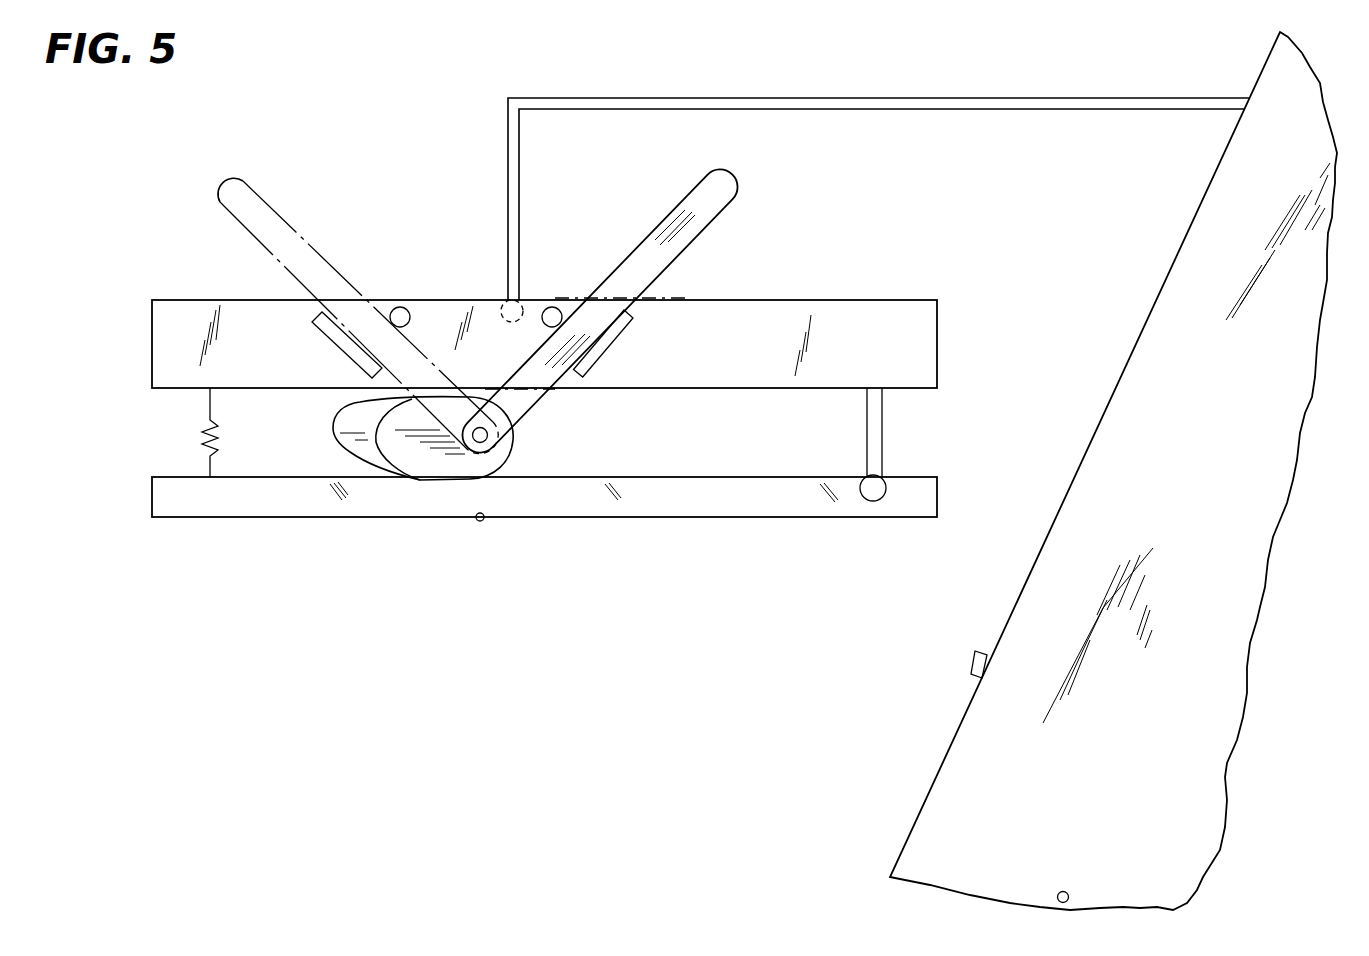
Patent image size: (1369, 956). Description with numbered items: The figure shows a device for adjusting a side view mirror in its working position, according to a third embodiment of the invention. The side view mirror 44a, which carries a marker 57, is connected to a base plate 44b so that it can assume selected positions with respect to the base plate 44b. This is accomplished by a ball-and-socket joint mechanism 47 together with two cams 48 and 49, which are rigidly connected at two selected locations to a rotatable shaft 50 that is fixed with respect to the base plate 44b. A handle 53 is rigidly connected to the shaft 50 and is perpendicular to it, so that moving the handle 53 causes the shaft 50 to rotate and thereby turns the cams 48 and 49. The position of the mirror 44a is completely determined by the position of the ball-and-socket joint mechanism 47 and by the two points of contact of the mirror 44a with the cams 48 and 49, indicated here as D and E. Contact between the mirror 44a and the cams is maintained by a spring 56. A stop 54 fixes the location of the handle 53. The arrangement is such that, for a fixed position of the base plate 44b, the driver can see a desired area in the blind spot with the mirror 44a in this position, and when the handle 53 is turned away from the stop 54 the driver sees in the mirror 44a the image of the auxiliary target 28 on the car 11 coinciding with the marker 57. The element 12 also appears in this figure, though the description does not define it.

The car 11 is at (1204, 193).
The mirror pivot point 12 is at (1070, 866).
The auxiliary target 28 is at (988, 660).
The side view mirror 44a is at (228, 512).
The base plate 44b is at (187, 343).
The ball-and-socket joint mechanism 47 is at (865, 440).
The cam 48 is at (342, 435).
The cam 49 is at (382, 448).
The rotatable shaft 50 is at (488, 435).
The handle 53 is at (653, 248).
The stop 54 is at (625, 326).
The spring 56 is at (200, 433).
The marker 57 is at (483, 521).
The point of contact D is at (425, 478).
The point of contact E is at (448, 478).